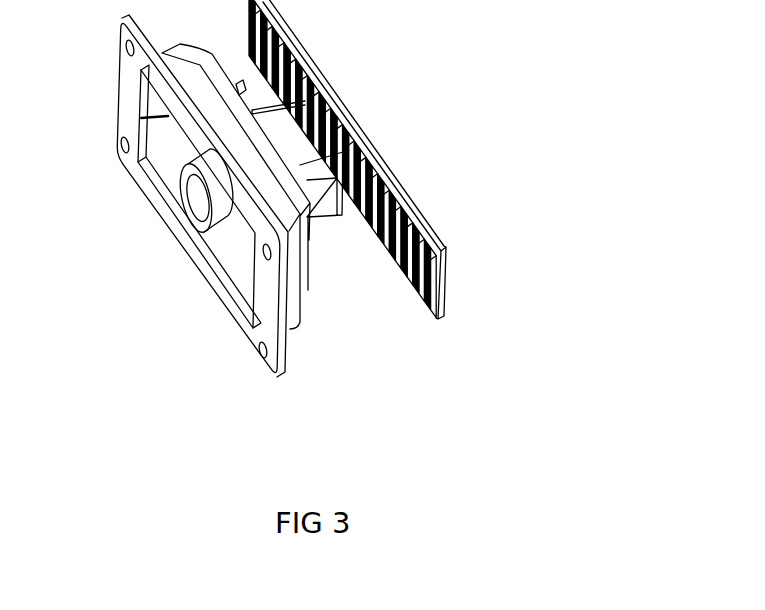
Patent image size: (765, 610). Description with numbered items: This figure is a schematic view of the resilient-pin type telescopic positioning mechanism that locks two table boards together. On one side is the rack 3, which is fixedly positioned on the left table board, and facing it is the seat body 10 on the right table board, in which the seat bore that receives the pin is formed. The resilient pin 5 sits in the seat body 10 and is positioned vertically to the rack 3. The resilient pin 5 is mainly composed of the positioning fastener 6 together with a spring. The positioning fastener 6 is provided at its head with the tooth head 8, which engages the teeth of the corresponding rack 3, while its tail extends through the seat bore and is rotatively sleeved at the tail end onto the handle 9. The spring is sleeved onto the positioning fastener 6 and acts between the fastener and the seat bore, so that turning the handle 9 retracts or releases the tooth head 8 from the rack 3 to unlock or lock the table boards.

The rack 3 is at (354, 159).
The resilient pin 5 is at (233, 229).
The positioning fastener 6 is at (323, 100).
The tooth head 8 is at (350, 128).
The handle 9 is at (165, 172).
The seat body 10 is at (126, 94).